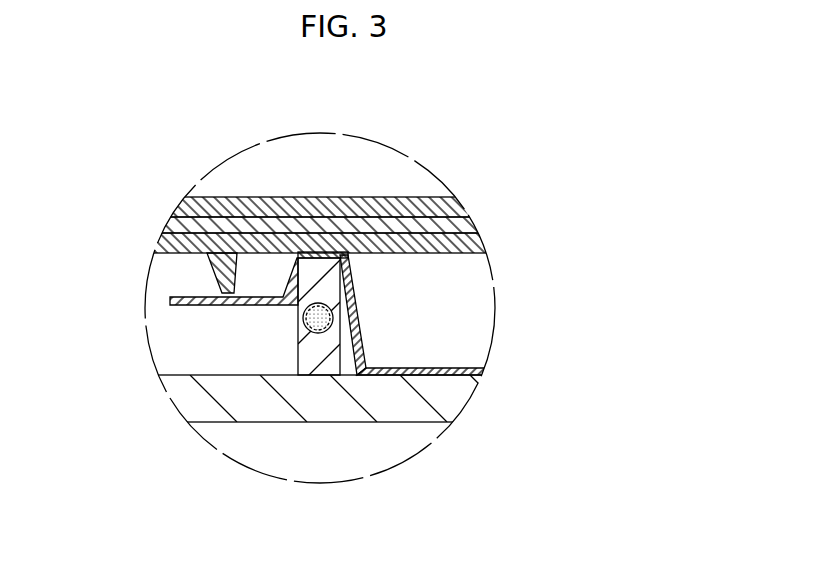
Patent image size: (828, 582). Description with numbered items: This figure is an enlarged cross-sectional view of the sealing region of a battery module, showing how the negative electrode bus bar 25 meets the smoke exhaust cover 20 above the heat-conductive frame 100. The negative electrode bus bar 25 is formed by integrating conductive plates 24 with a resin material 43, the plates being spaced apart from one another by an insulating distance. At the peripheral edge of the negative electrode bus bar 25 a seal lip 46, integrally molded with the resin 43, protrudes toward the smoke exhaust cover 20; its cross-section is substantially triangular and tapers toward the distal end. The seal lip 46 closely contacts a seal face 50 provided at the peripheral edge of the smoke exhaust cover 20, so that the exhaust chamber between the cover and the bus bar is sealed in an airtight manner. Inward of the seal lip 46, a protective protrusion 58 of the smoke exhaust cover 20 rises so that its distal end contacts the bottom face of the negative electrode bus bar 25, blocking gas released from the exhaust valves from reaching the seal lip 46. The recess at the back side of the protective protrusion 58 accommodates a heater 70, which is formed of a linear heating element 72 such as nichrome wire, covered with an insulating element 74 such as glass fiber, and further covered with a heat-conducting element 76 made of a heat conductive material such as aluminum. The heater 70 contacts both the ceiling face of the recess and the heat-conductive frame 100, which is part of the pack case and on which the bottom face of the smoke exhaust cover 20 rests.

The smoke exhaust cover 20 is at (453, 368).
The conductive plate 24 is at (430, 233).
The negative electrode bus bar 25 is at (320, 154).
The resin material 43 is at (390, 217).
The seal lip 46 is at (206, 263).
The seal face 50 is at (189, 296).
The protective protrusion 58 is at (306, 252).
The heater 70 is at (325, 414).
The linear heating element 72 is at (327, 340).
The insulating element 74 is at (340, 376).
The heat-conducting element 76 is at (308, 336).
The heat-conductive frame 100 is at (208, 408).